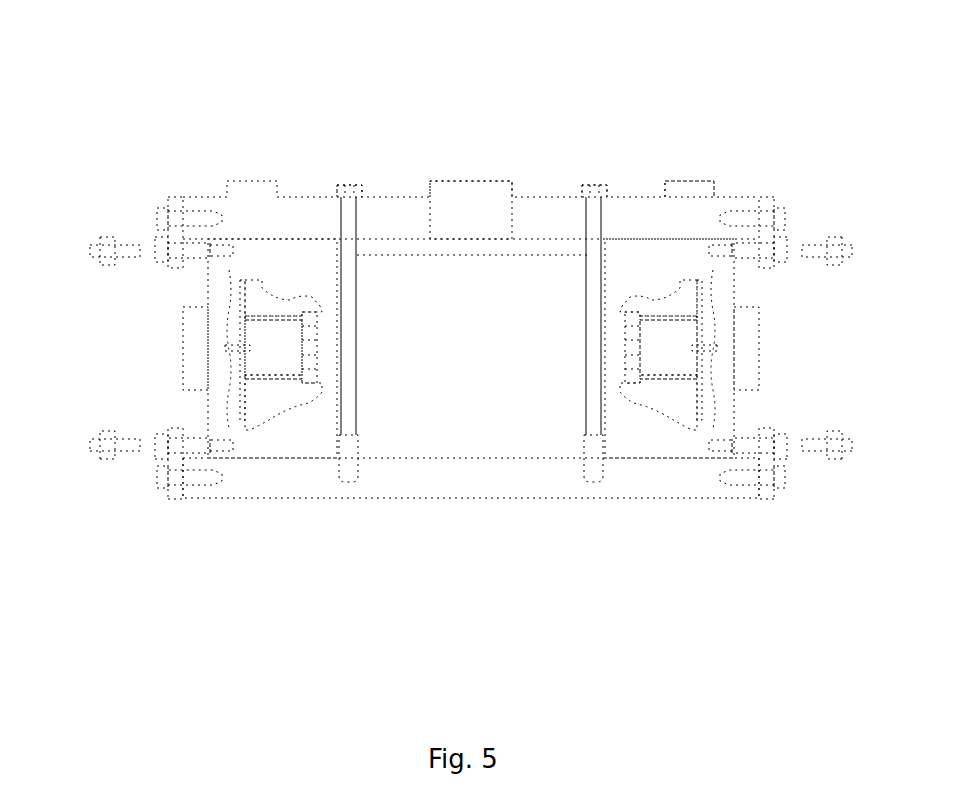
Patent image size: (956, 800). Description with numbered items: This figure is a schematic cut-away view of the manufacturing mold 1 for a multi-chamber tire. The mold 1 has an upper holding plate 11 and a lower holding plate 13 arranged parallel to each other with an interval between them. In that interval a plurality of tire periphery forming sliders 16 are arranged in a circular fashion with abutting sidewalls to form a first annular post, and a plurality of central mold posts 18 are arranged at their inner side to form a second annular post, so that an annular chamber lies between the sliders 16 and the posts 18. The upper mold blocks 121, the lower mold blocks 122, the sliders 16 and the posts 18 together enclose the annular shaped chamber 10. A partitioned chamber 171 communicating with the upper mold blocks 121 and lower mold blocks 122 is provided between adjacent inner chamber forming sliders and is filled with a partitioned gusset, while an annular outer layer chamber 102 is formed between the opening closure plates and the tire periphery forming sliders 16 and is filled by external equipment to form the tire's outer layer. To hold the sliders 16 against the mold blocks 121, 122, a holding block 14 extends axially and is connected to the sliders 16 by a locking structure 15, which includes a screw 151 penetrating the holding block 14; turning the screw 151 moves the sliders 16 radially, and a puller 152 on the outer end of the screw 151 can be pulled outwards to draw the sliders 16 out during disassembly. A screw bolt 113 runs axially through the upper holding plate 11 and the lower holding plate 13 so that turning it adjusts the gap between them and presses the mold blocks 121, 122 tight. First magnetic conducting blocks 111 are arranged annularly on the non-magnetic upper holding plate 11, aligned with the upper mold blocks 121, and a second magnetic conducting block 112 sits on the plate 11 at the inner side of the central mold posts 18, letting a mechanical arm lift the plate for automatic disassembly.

The manufacturing mold 1 is at (441, 296).
The shaped chamber 10 is at (707, 326).
The upper holding plate 11 is at (472, 161).
The first magnetic conducting blocks 111 is at (683, 190).
The second magnetic conducting block 112 is at (482, 195).
The screw bolt 113 is at (348, 223).
The upper mold blocks 121 is at (627, 346).
The lower mold blocks 122 is at (627, 467).
The lower holding plate 13 is at (443, 480).
The holding block 14 is at (173, 200).
The locking structure 15 is at (131, 236).
The screw 151 is at (197, 248).
The puller 152 is at (149, 222).
The tire periphery forming sliders 16 is at (735, 362).
The outer layer chamber 102 is at (720, 388).
The central mold posts 18 is at (682, 407).
The partitioned chamber 171 is at (660, 413).